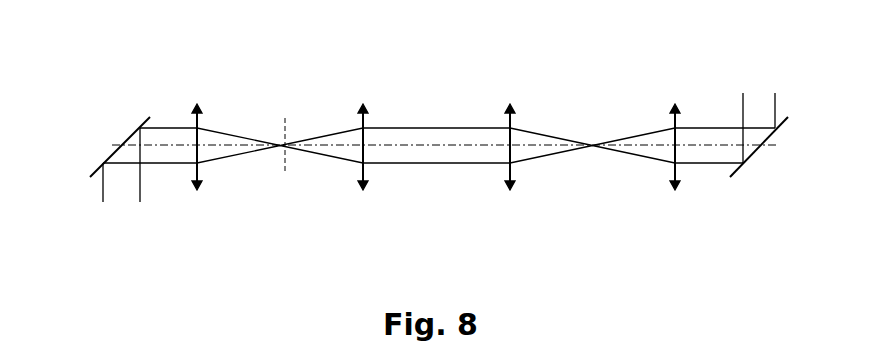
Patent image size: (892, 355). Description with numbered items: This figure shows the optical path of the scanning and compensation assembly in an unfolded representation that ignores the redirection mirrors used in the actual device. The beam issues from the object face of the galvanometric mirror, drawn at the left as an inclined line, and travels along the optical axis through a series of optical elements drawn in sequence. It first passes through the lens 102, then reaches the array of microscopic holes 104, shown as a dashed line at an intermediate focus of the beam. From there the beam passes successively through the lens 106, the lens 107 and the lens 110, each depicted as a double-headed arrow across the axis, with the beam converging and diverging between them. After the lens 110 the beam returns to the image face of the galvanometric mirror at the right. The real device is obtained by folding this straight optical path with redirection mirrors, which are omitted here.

The lens 102 is at (196, 192).
The array of microscopic holes 104 is at (288, 113).
The lens 106 is at (364, 195).
The lens 107 is at (510, 195).
The lens 110 is at (672, 193).